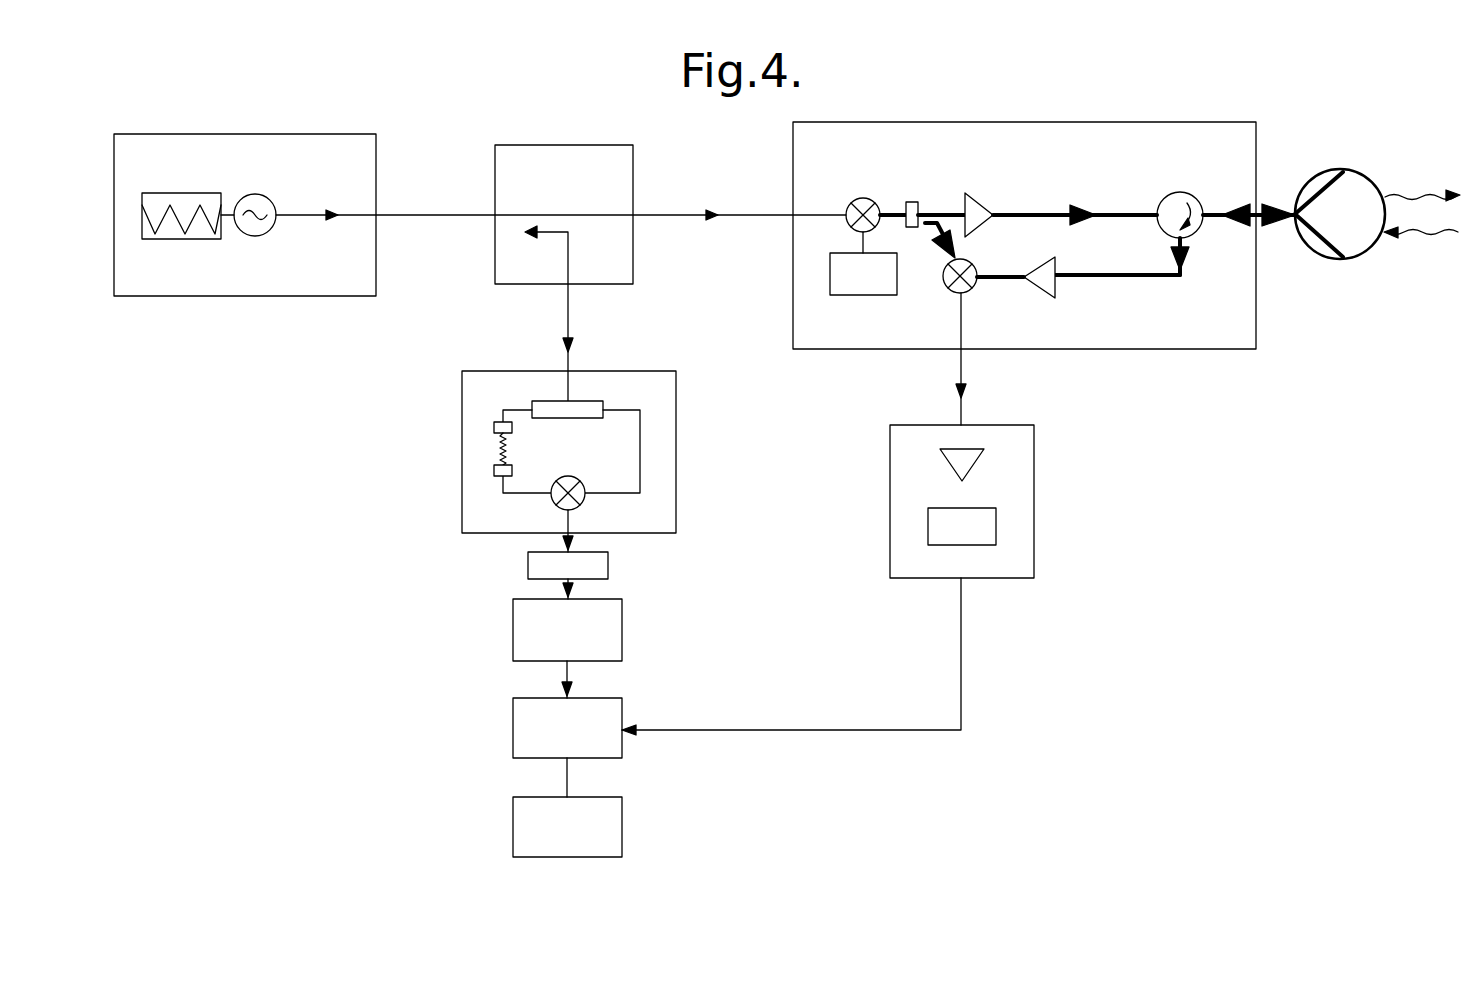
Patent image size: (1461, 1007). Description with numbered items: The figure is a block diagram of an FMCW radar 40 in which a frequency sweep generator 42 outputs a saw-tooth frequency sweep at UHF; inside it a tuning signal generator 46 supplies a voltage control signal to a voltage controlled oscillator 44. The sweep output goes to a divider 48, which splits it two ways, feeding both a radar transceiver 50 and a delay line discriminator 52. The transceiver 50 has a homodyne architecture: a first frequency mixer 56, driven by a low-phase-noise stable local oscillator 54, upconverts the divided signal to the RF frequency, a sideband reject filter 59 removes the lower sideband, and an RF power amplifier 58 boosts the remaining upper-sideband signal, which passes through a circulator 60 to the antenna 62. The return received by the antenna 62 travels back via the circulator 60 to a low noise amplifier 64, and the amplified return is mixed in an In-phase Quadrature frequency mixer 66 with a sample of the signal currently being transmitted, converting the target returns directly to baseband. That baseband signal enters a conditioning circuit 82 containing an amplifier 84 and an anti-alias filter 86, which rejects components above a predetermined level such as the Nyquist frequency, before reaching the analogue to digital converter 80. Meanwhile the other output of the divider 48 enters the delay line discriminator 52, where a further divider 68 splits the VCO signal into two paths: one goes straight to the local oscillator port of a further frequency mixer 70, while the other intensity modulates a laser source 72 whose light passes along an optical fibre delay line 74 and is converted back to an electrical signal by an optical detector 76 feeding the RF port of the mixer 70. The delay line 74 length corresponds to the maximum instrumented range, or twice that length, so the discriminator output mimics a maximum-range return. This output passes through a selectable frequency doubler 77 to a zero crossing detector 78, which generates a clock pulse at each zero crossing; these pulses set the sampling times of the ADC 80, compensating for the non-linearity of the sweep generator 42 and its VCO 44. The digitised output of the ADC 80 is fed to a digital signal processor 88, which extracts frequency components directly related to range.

The FMCW radar 40 is at (300, 808).
The frequency sweep generator 42 is at (340, 134).
The voltage controlled oscillator 44 is at (268, 198).
The tuning signal generator 46 is at (180, 193).
The divider 48 is at (605, 145).
The radar transceiver 50 is at (866, 122).
The delay line discriminator 52 is at (648, 371).
The stable local oscillator 54 is at (863, 263).
The first frequency mixer 56 is at (862, 190).
The RF power amplifier 58 is at (980, 192).
The sideband reject filter 59 is at (912, 202).
The circulator 60 is at (1182, 186).
The antenna 62 is at (1320, 258).
The low noise amplifier 64 is at (1048, 283).
The In-phase Quadrature frequency mixer 66 is at (970, 291).
The further divider 68 is at (550, 403).
The further frequency mixer 70 is at (586, 477).
The laser source 72 is at (494, 427).
The optical fibre delay line 74 is at (520, 449).
The optical detector 76 is at (494, 470).
The selectable frequency doubler 77 is at (553, 566).
The zero crossing detector 78 is at (567, 648).
The analogue to digital converter 80 is at (737, 687).
The conditioning circuit 82 is at (1034, 503).
The amplifier 84 is at (952, 463).
The anti-alias filter 86 is at (962, 526).
The digital signal processor 88 is at (567, 827).